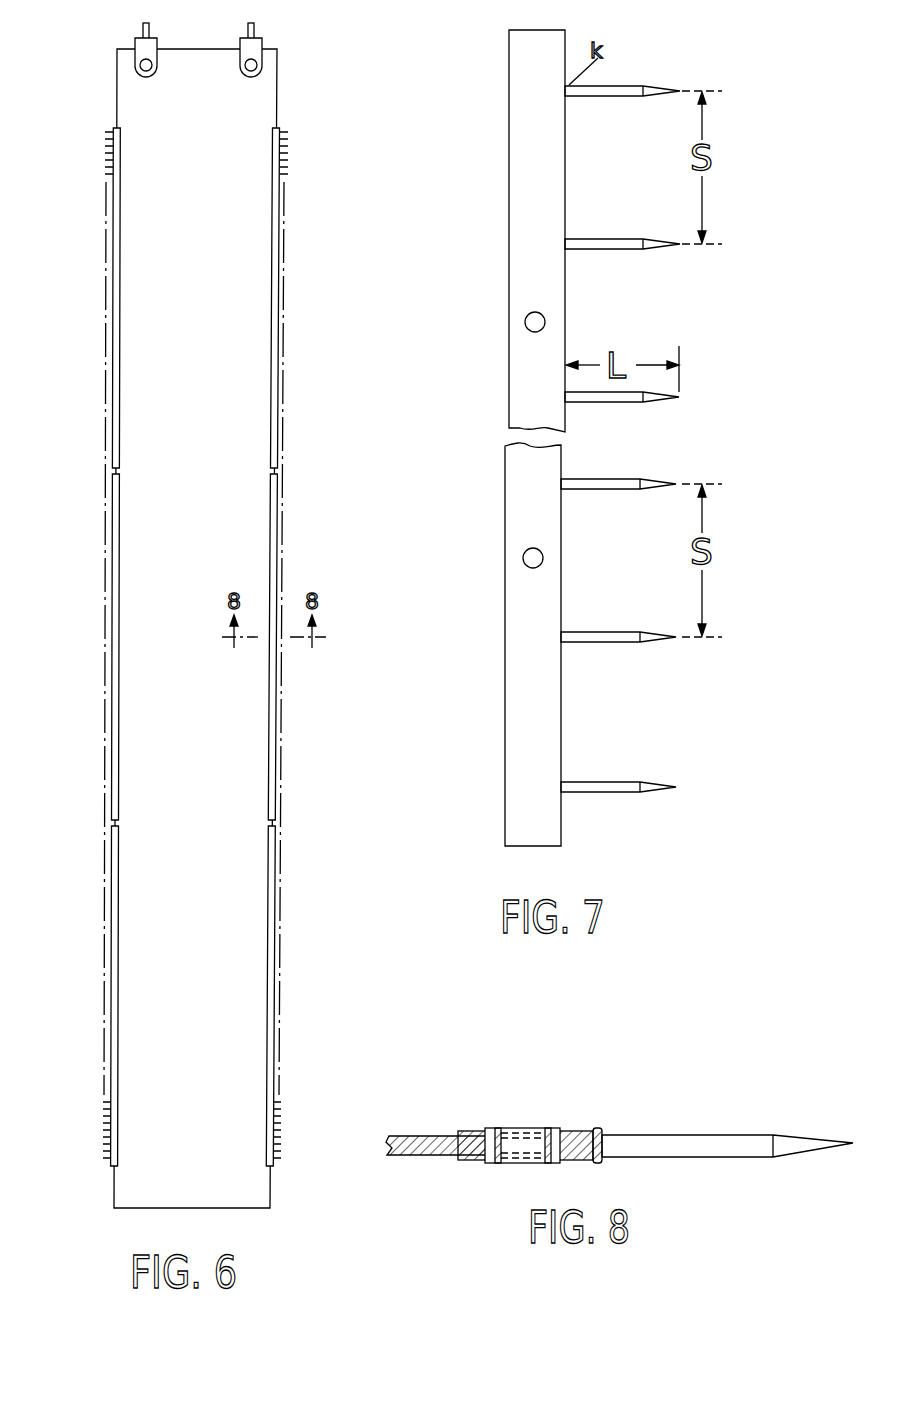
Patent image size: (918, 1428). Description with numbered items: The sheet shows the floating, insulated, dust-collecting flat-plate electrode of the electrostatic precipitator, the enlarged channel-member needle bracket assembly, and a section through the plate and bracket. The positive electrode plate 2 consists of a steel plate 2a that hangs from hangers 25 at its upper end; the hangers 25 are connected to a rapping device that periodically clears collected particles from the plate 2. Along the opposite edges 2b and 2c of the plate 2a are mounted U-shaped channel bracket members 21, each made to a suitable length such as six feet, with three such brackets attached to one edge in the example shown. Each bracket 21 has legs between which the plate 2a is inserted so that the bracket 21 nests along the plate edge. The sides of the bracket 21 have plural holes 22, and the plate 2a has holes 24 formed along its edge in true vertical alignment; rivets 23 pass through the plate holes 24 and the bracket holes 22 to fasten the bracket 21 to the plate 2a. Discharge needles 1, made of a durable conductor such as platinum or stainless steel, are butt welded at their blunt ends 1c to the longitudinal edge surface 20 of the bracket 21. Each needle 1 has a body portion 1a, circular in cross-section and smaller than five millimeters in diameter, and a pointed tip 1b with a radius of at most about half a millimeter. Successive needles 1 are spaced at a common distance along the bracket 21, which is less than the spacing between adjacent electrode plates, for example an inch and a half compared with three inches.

In FIG. 6, the discharge electrode needle 1 is at (283, 172).
In FIG. 7, the discharge electrode needle 1 is at (620, 78).
In FIG. 8, the discharge electrode needle 1 is at (665, 1125).
In FIG. 7, the body portion 1a is at (660, 87).
In FIG. 8, the body portion 1a is at (852, 1141).
In FIG. 7, the tip 1b is at (602, 96).
In FIG. 8, the tip 1b is at (677, 1158).
In FIG. 8, the blunt end 1c is at (596, 1162).
In FIG. 6, the positive electrode plate 2 is at (292, 282).
In FIG. 6, the steel plate 2a is at (211, 275).
In FIG. 8, the steel plate 2a is at (420, 1137).
In FIG. 6, the plate edge 2b is at (278, 99).
In FIG. 8, the plate edge 2b is at (585, 1157).
In FIG. 6, the plate edge 2c is at (117, 104).
In FIG. 7, the longitudinal edge surface 20 is at (567, 323).
In FIG. 8, the longitudinal edge surface 20 is at (600, 1146).
In FIG. 6, the U-shaped channel bracket member 21 is at (113, 297).
In FIG. 7, the U-shaped channel bracket member 21 is at (546, 259).
In FIG. 8, the U-shaped channel bracket member 21 is at (579, 1135).
In FIG. 7, the hole 22 is at (525, 322).
In FIG. 8, the hole 22 is at (530, 1164).
In FIG. 8, the rivet 23 is at (512, 1128).
In FIG. 8, the plate hole 24 is at (488, 1137).
In FIG. 6, the hanger 25 is at (243, 42).